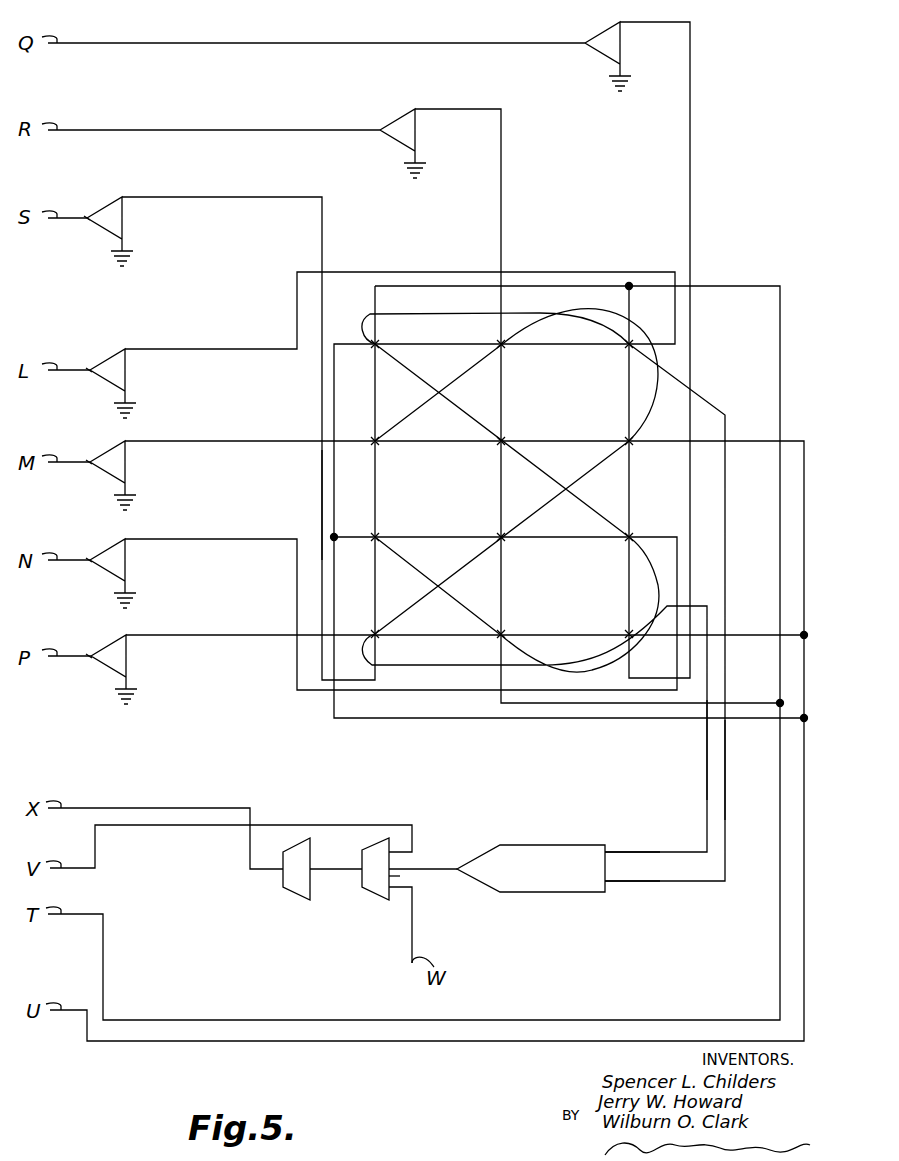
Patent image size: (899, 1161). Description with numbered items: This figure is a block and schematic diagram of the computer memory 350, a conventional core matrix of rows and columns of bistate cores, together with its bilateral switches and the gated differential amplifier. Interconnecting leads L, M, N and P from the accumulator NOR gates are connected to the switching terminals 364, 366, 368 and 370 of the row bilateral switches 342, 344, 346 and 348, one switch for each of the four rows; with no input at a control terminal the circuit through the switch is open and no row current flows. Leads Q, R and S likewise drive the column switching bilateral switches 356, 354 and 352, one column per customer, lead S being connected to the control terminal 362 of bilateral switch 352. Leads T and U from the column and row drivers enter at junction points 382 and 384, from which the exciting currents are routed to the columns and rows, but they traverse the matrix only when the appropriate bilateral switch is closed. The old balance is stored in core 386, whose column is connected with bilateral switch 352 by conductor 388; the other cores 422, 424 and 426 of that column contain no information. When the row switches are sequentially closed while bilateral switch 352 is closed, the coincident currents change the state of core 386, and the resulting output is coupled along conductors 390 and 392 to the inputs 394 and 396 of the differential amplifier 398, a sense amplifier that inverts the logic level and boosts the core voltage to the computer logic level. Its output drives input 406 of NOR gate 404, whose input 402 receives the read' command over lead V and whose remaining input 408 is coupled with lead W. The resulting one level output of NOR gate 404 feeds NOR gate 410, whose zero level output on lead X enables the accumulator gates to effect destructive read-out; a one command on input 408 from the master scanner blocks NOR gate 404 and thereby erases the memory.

The bilateral switch 342 is at (125, 372).
The bilateral switch 344 is at (125, 464).
The bilateral switch 346 is at (125, 563).
The bilateral switch 348 is at (126, 660).
The computer memory 350 is at (602, 252).
The bilateral switch 352 is at (122, 220).
The bilateral switch 354 is at (415, 133).
The bilateral switch 356 is at (620, 43).
The control terminal 362 is at (89, 212).
The switching terminal 364 is at (90, 366).
The switching terminal 366 is at (90, 459).
The switching terminal 368 is at (91, 558).
The switching terminal 370 is at (91, 655).
The junction point 382 is at (778, 706).
The junction point 384 is at (806, 720).
The core 386 is at (378, 534).
The conductor 388 is at (322, 502).
The conductor 390 is at (705, 772).
The conductor 392 is at (727, 780).
The input 394 is at (607, 850).
The input 396 is at (607, 884).
The differential amplifier 398 is at (510, 843).
The input 402 is at (392, 852).
The NOR gate 404 is at (362, 878).
The input 406 is at (392, 876).
The input 408 is at (392, 888).
The NOR gate 410 is at (296, 896).
The core 422 is at (378, 340).
The core 424 is at (378, 439).
The core 426 is at (378, 632).